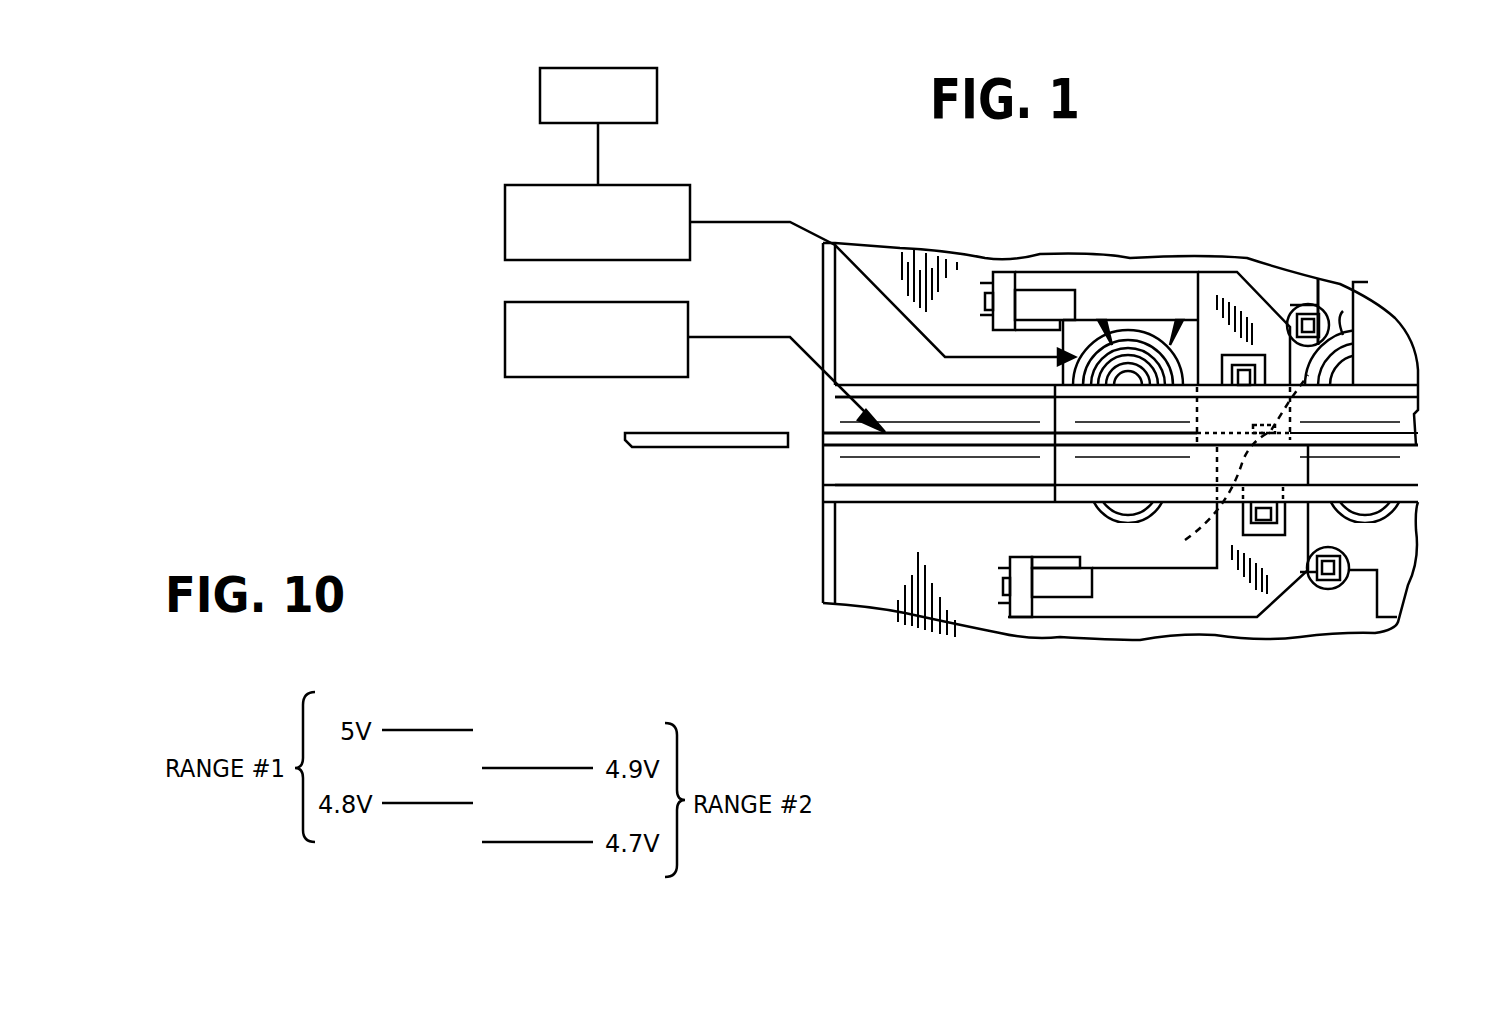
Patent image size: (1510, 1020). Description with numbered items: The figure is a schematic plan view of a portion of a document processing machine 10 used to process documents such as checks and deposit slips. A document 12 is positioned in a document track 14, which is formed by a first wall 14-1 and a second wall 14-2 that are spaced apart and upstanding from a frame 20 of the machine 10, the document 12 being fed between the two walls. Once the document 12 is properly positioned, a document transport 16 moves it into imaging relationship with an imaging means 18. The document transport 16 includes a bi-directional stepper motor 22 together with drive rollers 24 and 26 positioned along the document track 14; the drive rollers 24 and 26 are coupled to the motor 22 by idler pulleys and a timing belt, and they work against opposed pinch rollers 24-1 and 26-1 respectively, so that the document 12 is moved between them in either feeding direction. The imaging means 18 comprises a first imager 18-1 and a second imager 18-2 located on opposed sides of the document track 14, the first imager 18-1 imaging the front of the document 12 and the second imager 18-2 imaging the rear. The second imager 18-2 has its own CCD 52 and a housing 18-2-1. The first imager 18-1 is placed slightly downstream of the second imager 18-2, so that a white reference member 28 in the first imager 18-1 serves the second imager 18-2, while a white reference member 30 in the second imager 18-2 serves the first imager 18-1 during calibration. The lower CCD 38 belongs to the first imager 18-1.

The document processing machine 10 is at (1322, 238).
The document 12 is at (672, 447).
The document track 14 is at (505, 305).
The first wall 14-1 is at (958, 472).
The second wall 14-2 is at (908, 408).
The document transport 16 is at (690, 186).
The imaging means 18 is at (1280, 472).
The first imager 18-1 is at (1152, 603).
The second imager 18-2 is at (1100, 283).
The housing 18-2-1 is at (1145, 273).
The frame 20 is at (863, 588).
The motor 22 is at (540, 72).
The drive roller 24 is at (1130, 332).
The pinch roller 24-1 is at (1102, 510).
The drive roller 26 is at (1343, 311).
The pinch roller 26-1 is at (1378, 517).
The white reference member 28 is at (1229, 464).
The white reference member 30 is at (1340, 372).
The CCD of lower imager 38 is at (1022, 603).
The CCD 52 is at (1003, 272).